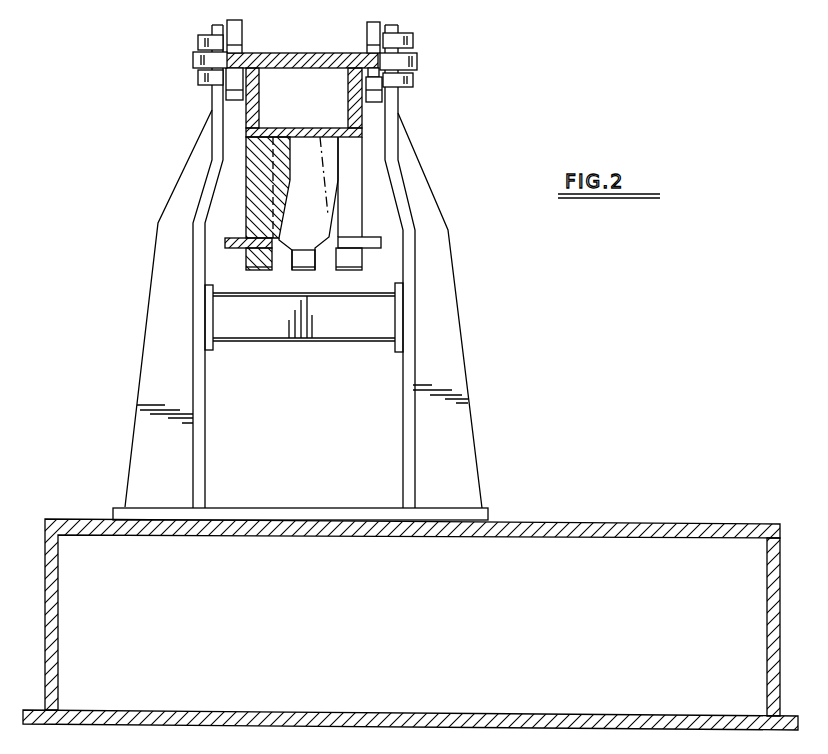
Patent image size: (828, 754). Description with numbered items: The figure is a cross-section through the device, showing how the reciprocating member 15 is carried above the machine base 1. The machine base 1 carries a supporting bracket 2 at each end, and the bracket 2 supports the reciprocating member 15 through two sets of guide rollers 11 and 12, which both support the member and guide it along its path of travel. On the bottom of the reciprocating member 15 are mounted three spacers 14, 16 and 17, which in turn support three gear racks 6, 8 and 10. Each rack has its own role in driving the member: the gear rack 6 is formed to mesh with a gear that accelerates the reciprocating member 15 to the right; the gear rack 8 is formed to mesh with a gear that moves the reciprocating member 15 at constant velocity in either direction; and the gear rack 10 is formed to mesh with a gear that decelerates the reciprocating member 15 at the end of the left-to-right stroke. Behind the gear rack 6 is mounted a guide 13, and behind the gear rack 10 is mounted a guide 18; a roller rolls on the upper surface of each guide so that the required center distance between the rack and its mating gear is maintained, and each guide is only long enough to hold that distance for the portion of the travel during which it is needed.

The machine base 1 is at (623, 523).
The supporting bracket 2 is at (458, 303).
The gear rack 6 is at (262, 273).
The gear rack 8 is at (303, 277).
The gear rack 10 is at (345, 277).
The guide rollers 11 is at (240, 33).
The guide rollers 12 is at (197, 60).
The guide 13 is at (225, 243).
The spacer 14 is at (247, 190).
The reciprocating member 15 is at (295, 55).
The spacer 16 is at (312, 218).
The spacer 17 is at (362, 202).
The guide 18 is at (381, 246).